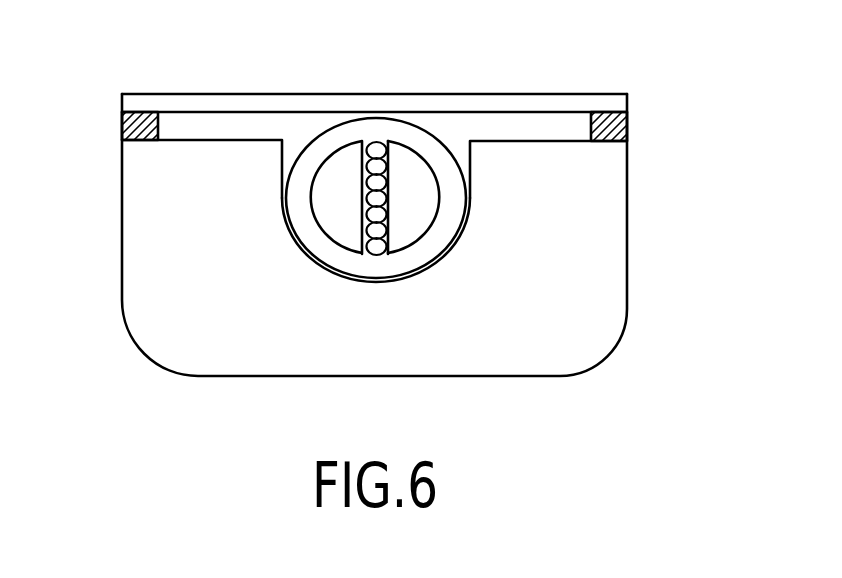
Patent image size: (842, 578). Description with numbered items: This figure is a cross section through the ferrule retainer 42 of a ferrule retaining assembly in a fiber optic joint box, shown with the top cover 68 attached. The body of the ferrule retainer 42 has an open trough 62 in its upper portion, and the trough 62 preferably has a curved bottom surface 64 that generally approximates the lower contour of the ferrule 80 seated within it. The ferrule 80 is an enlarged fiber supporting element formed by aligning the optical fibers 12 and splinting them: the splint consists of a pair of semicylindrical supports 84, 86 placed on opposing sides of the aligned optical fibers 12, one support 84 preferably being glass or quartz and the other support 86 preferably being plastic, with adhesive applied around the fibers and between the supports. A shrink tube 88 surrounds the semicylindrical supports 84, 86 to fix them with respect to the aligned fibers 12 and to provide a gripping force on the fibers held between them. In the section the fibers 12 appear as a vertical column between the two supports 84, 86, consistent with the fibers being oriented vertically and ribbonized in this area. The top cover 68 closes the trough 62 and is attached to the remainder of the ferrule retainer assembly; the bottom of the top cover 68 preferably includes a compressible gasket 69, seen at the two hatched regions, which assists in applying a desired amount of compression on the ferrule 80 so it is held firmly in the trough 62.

The optical fibers 12 is at (376, 250).
The ferrule retainer 42 is at (627, 232).
The trough 62 is at (287, 163).
The curved bottom surface 64 is at (425, 270).
The top cover 68 is at (543, 97).
The compressible gasket 69 is at (128, 125).
The ferrule 80 is at (352, 119).
The semicylindrical support 84 is at (325, 228).
The semicylindrical support 86 is at (430, 200).
The shrink tube 88 is at (402, 134).